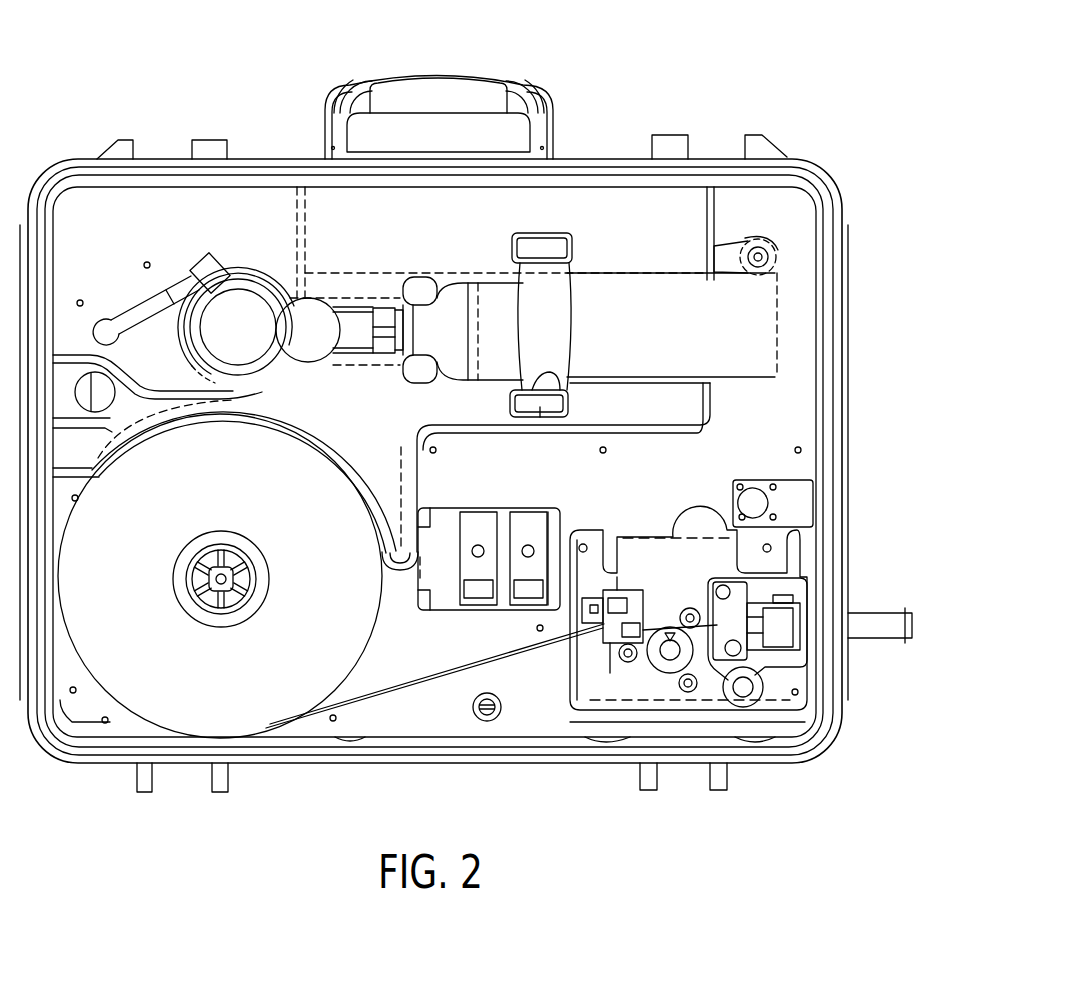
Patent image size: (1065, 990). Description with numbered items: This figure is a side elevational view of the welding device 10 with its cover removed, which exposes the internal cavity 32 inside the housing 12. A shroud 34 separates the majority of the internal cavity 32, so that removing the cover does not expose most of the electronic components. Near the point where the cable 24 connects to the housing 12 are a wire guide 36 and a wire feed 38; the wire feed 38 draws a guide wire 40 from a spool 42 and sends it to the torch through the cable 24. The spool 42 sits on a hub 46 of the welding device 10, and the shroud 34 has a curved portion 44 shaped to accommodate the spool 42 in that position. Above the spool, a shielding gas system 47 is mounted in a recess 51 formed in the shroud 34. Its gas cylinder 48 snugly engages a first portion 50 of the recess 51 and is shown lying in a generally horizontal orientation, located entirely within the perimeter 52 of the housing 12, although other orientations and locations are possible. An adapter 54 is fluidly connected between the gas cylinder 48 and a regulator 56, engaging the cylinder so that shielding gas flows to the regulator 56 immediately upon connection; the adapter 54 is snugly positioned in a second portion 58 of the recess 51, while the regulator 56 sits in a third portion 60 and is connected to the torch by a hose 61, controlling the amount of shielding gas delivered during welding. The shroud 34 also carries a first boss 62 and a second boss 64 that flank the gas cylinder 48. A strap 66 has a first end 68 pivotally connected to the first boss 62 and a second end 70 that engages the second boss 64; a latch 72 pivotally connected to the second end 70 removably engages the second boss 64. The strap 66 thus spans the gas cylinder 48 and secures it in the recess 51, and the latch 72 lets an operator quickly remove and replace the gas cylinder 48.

The welding device 10 is at (702, 58).
The housing 12 is at (848, 507).
The cable 24 is at (876, 630).
The internal cavity 32 is at (783, 398).
The shroud 34 is at (373, 411).
The wire guide 36 is at (607, 647).
The wire feed 38 is at (685, 577).
The guide wire 40 is at (380, 697).
The spool 42 is at (193, 679).
The curved portion 44 is at (166, 438).
The hub 46 is at (193, 597).
The shielding gas system 47 is at (395, 247).
The gas cylinder 48 is at (708, 344).
The first portion 50 is at (618, 272).
The recess 51 is at (428, 288).
The perimeter 52 is at (832, 218).
The adapter 54 is at (348, 310).
The regulator 56 is at (253, 340).
The second portion 58 is at (366, 307).
The third portion 60 is at (256, 274).
The hose 61 is at (120, 306).
The first boss 62 is at (565, 235).
The second boss 64 is at (568, 402).
The strap 66 is at (568, 337).
The first end 68 is at (537, 252).
The second end 70 is at (538, 405).
The latch 72 is at (543, 367).